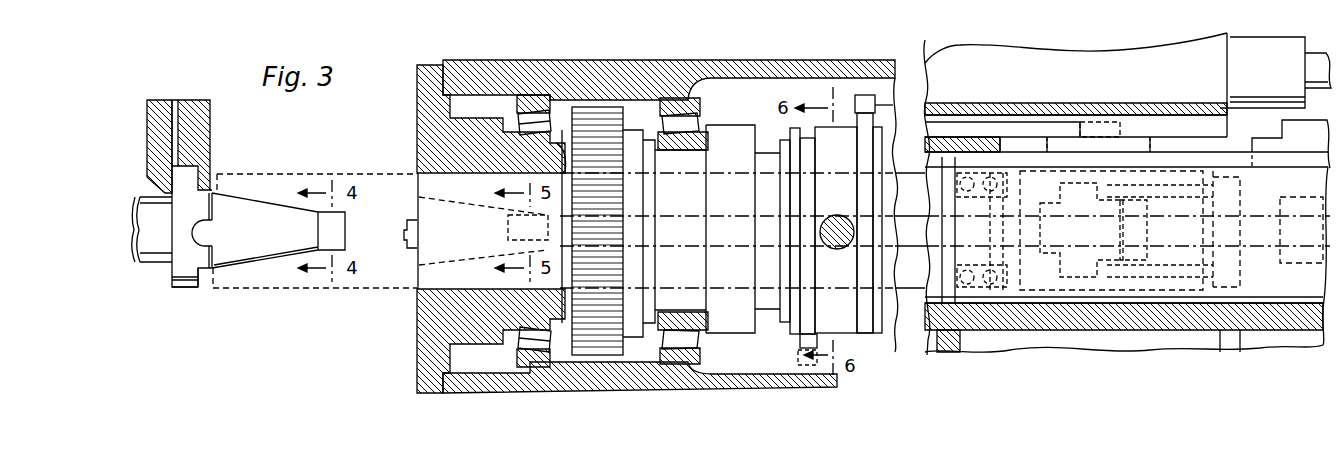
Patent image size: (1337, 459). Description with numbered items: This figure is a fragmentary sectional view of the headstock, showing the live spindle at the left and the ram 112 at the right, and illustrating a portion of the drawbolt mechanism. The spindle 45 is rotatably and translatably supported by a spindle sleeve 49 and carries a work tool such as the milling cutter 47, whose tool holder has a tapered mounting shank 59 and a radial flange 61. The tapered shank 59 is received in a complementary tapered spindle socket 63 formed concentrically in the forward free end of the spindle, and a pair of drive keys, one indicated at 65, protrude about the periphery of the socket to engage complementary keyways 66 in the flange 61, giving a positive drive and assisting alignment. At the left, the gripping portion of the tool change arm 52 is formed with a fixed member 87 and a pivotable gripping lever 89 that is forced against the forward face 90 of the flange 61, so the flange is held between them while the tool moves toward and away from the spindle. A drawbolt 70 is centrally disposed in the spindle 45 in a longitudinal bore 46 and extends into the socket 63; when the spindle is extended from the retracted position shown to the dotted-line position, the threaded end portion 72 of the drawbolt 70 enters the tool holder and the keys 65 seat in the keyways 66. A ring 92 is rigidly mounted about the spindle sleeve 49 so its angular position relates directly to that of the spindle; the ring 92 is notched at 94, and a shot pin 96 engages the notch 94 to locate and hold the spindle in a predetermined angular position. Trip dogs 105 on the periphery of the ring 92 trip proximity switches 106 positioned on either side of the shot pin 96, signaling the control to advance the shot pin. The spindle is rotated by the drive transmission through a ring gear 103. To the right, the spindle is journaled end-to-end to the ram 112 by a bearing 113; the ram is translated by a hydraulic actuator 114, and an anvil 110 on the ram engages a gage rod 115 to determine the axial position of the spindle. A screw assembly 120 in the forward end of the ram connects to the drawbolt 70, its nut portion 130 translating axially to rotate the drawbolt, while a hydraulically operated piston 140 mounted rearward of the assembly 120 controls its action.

The spindle 45 is at (384, 174).
The longitudinal bore 46 is at (692, 214).
The milling cutter 47 is at (137, 270).
The spindle sleeve 49 is at (417, 328).
The tool change arm 52 is at (199, 97).
The tapered mounting shank 59 is at (263, 211).
The radial flange 61 is at (200, 289).
The tapered spindle socket 63 is at (417, 205).
The drive key 65 is at (410, 240).
The keyway 66 is at (214, 224).
The drawbolt 70 is at (914, 215).
The threaded end portion 72 is at (503, 229).
The fixed member 87 is at (200, 128).
The pivotable gripping lever 89 is at (152, 108).
The forward face 90 is at (177, 290).
The ring 92 is at (853, 334).
The notch 94 is at (838, 215).
The shot pin 96 is at (838, 249).
The ring gear 103 is at (612, 131).
The trip dogs 105 is at (861, 128).
The proximity switches 106 is at (876, 103).
The anvil 110 is at (1103, 120).
The ram 112 is at (1190, 156).
The bearing 113 is at (993, 180).
The hydraulic actuator 114 is at (1300, 258).
The gage rod 115 is at (1052, 122).
The screw assembly 120 is at (1075, 298).
The nut portion 130 is at (1083, 212).
The hydraulically operated piston 140 is at (1238, 212).